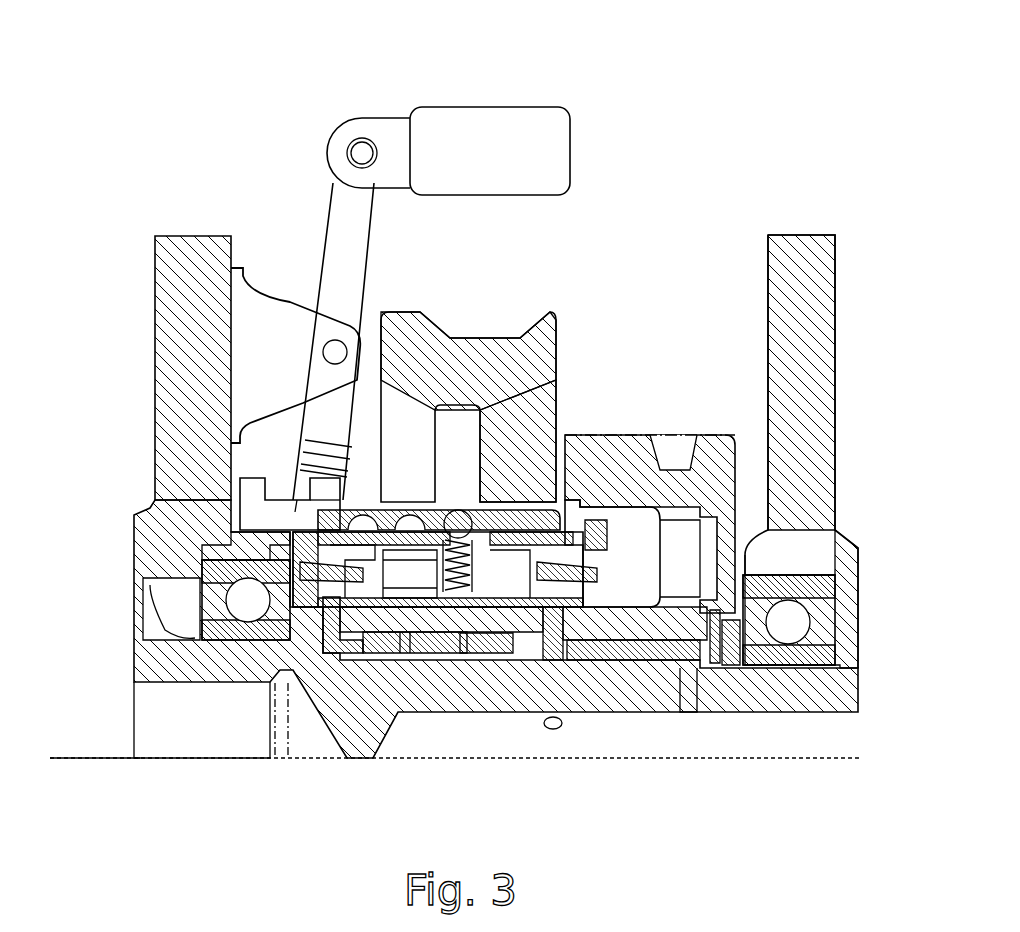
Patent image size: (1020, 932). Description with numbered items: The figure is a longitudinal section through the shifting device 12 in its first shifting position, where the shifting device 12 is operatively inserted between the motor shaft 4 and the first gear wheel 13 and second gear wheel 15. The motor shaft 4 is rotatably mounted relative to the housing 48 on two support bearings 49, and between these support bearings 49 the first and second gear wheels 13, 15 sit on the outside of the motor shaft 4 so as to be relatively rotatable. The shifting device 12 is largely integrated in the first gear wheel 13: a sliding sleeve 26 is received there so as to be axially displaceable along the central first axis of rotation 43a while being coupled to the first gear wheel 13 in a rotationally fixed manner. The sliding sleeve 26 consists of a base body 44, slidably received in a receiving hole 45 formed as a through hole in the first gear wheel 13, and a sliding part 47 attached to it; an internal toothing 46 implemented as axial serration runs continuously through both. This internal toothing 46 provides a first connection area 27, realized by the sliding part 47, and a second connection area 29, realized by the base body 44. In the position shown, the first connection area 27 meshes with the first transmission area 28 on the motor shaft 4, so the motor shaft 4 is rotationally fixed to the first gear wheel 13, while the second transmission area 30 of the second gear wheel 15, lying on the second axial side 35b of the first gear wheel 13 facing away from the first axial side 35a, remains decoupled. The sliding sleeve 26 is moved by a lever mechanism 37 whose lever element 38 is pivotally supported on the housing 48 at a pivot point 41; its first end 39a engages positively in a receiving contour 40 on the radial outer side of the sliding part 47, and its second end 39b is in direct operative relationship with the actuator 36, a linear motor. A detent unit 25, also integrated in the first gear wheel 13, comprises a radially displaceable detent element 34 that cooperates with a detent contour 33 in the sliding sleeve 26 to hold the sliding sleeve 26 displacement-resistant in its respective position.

The motor shaft 4 is at (380, 760).
The shifting device 12 is at (385, 257).
The first gear wheel 13 is at (505, 340).
The second gear wheel 15 is at (660, 440).
The detent unit 25 is at (505, 600).
The sliding sleeve 26 is at (395, 520).
The first connection area 27 is at (275, 550).
The first transmission area 28 is at (285, 532).
The second connection area 29 is at (610, 640).
The second transmission area 30 is at (640, 460).
The detent contour 33 is at (470, 600).
The detent element 34 is at (510, 515).
The first axial side 35a is at (374, 330).
The second axial side 35b is at (580, 320).
The actuator 36 is at (485, 122).
The lever mechanism 37 is at (300, 262).
The lever element 38 is at (345, 215).
The first end 39a is at (282, 430).
The second end 39b is at (342, 110).
The receiving contour 40 is at (278, 490).
The pivot point 41 is at (325, 342).
The first axis of rotation 43a is at (72, 762).
The base body 44 is at (415, 520).
The receiving hole 45 is at (545, 515).
The internal teeth 46 is at (470, 540).
The sliding part 47 is at (328, 482).
The housing 48 is at (170, 280).
The support bearings 49 is at (245, 600).